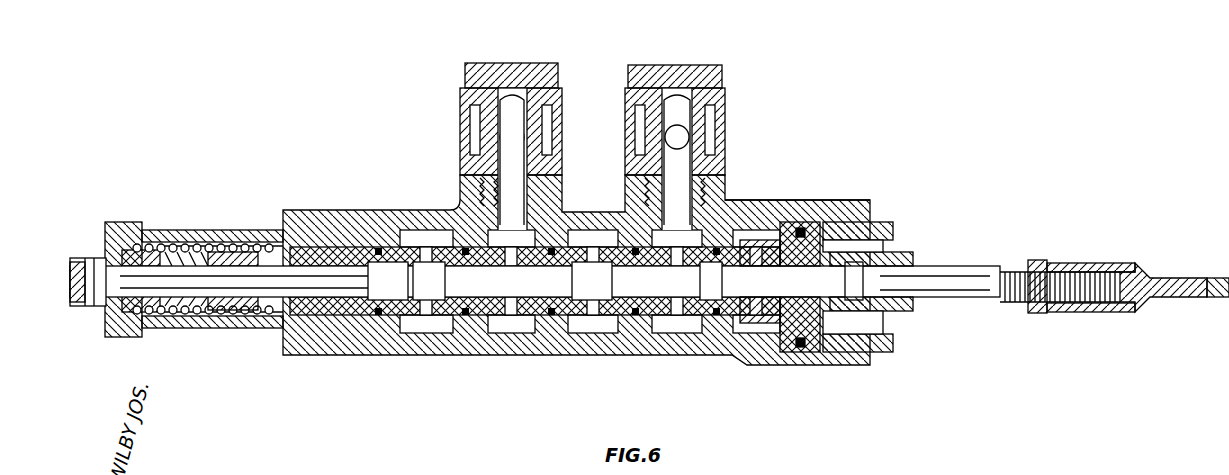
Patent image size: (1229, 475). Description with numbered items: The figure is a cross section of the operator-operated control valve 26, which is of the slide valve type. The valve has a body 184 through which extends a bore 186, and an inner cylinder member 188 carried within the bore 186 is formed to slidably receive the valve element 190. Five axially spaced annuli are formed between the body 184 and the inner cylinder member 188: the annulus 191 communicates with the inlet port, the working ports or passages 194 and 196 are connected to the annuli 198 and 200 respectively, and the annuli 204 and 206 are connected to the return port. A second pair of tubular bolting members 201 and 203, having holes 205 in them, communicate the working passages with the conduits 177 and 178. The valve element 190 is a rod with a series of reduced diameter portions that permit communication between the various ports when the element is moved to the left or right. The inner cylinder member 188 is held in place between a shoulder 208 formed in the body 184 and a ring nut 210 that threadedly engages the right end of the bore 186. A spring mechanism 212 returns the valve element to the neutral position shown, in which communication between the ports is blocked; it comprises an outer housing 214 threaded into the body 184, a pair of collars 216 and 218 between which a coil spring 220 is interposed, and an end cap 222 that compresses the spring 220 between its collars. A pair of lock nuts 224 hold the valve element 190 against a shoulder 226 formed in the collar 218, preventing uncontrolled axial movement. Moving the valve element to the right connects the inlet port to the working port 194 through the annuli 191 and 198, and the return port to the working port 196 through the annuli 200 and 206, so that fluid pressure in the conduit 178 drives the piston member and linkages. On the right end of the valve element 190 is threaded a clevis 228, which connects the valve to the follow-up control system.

The operator-operated control valve 26 is at (318, 206).
The conduit 177 is at (460, 110).
The conduit 178 is at (718, 115).
The body 184 is at (812, 208).
The bore 186 is at (512, 333).
The inner cylinder member 188 is at (683, 333).
The valve element 190 is at (930, 280).
The annulus 191 is at (598, 333).
The working port 194 is at (500, 148).
The working port 196 is at (690, 150).
The annulus 198 is at (480, 192).
The annulus 200 is at (728, 198).
The tubular bolting member 201 is at (510, 80).
The tubular bolting member 203 is at (698, 80).
The annulus 204 is at (420, 333).
The holes 205 is at (667, 113).
The annulus 206 is at (768, 352).
The shoulder 208 is at (764, 222).
The ring nut 210 is at (873, 224).
The spring mechanism 212 is at (262, 330).
The outer housing 214 is at (218, 320).
The collar 216 is at (150, 250).
The collar 218 is at (252, 250).
The coil spring 220 is at (186, 244).
The end cap 222 is at (120, 335).
The lock nuts 224 is at (112, 270).
The shoulder 226 is at (288, 290).
The clevis 228 is at (1130, 280).